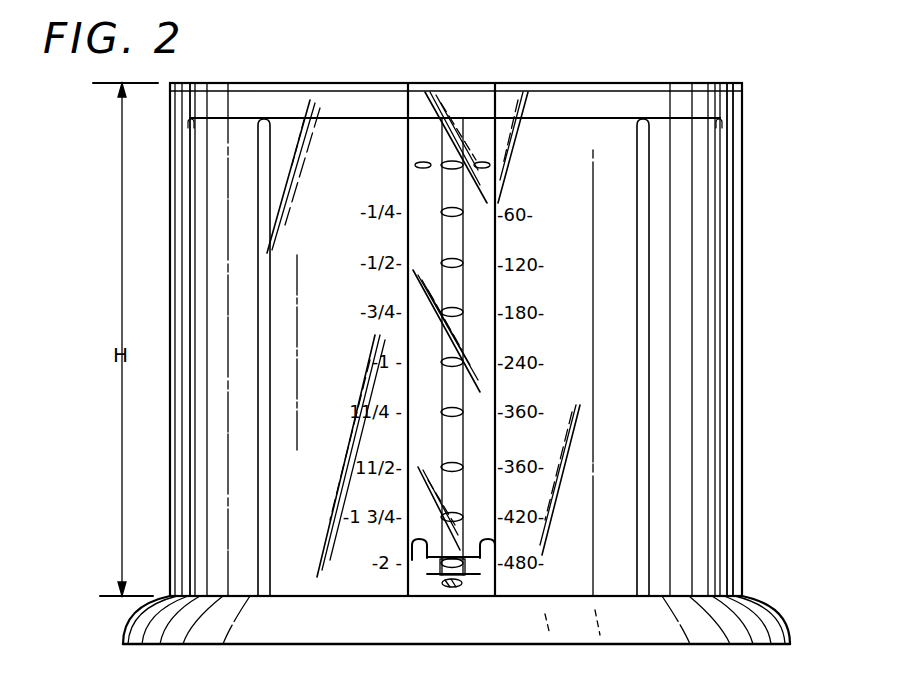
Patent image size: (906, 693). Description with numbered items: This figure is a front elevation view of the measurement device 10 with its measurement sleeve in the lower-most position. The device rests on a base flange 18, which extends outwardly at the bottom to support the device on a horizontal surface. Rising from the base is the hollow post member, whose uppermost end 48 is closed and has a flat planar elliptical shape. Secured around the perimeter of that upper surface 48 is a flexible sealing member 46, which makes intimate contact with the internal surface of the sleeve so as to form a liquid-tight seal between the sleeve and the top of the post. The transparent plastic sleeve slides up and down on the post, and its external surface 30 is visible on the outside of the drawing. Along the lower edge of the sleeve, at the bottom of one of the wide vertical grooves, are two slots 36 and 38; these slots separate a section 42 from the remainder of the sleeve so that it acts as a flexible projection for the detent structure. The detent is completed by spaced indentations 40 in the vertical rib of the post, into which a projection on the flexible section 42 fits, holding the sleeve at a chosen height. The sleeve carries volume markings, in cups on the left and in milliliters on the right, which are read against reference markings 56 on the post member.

The measurement device 10 is at (746, 284).
The base flange 18 is at (763, 598).
The external surface 30 is at (742, 385).
The slot 36 is at (413, 597).
The slot 38 is at (488, 590).
The spaced indentations 40 is at (443, 257).
The section 42 is at (434, 590).
The flexible sealing member 46 is at (610, 100).
The uppermost end 48 is at (362, 82).
The reference markings 56 is at (483, 160).